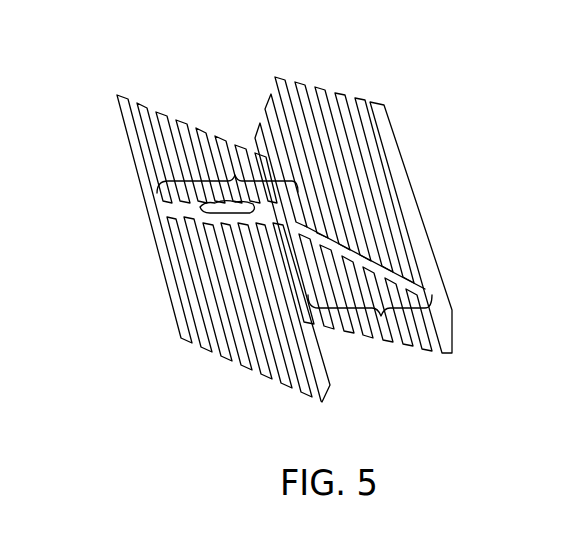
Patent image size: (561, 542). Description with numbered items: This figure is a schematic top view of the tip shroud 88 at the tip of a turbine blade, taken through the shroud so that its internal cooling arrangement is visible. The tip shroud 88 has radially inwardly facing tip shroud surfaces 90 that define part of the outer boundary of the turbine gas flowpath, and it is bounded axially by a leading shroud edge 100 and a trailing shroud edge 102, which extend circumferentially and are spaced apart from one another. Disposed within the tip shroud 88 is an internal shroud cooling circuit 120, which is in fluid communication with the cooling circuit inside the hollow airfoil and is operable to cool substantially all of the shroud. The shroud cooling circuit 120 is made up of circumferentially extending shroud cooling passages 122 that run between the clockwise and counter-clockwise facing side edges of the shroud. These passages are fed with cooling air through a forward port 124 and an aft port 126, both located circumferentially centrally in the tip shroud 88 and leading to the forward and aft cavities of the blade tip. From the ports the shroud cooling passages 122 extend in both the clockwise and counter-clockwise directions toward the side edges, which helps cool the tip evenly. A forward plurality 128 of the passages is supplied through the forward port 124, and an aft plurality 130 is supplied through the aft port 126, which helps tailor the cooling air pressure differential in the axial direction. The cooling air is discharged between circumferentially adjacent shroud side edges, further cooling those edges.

The tip shroud 88 is at (427, 223).
The tip shroud surfaces 90 is at (228, 358).
The leading shroud edge 100 is at (118, 118).
The trailing shroud edge 102 is at (437, 259).
The internal shroud cooling circuit 120 is at (369, 97).
The shroud cooling passages 122 is at (373, 139).
The forward port 124 is at (222, 216).
The aft port 126 is at (332, 243).
The forward plurality of shroud cooling passages 128 is at (234, 178).
The aft plurality of shroud cooling passages 130 is at (381, 316).